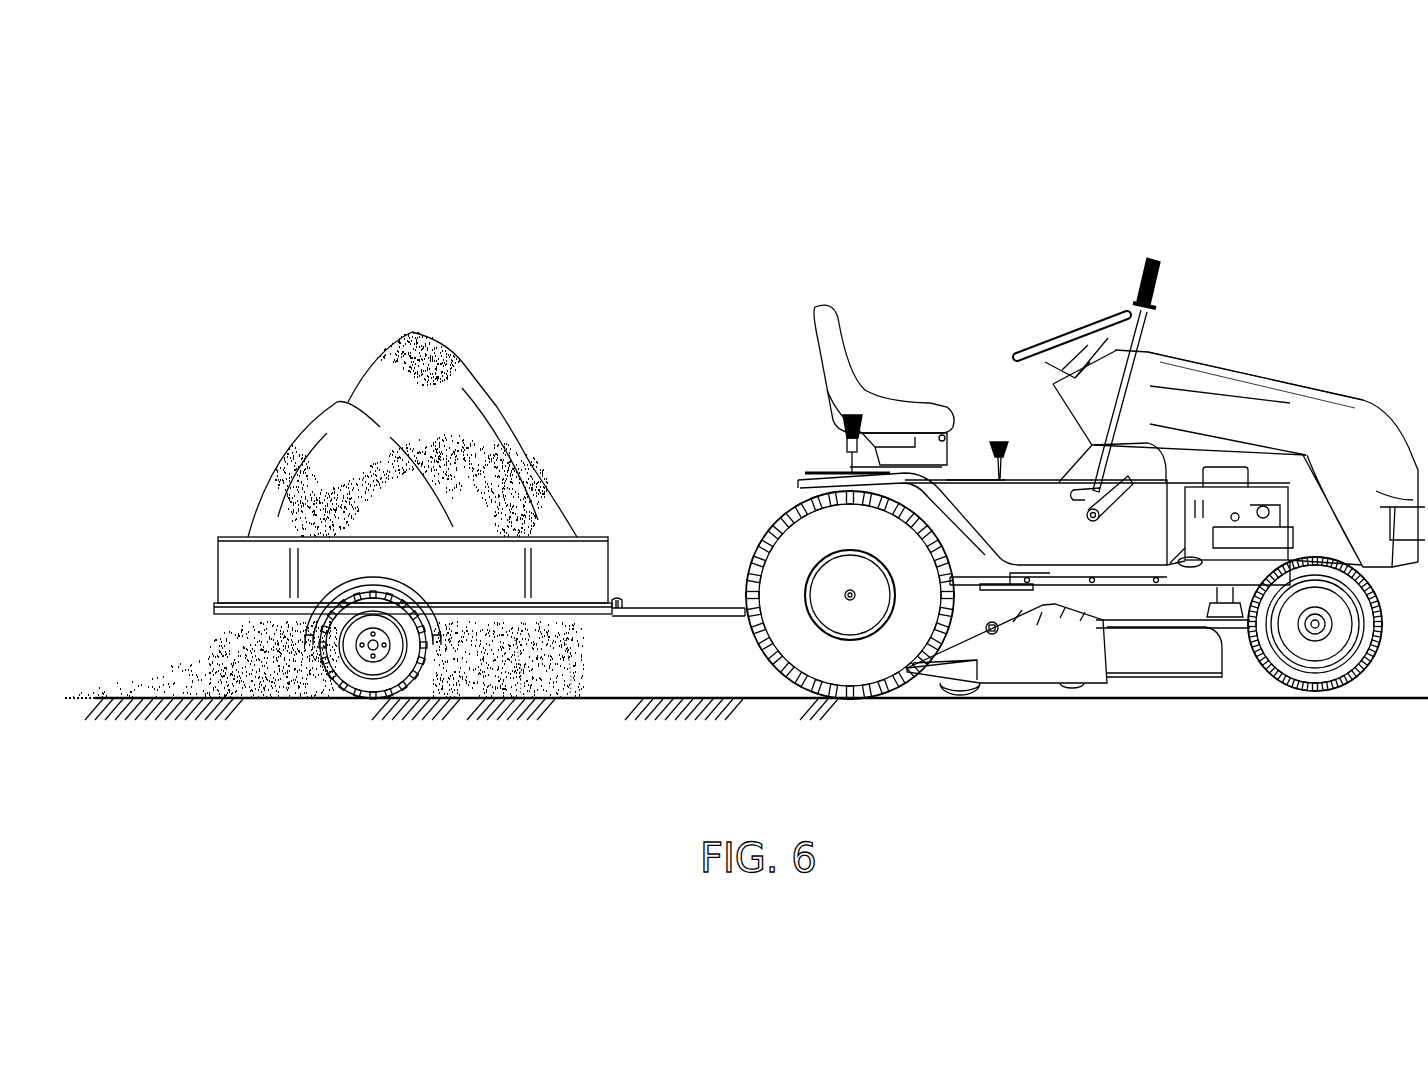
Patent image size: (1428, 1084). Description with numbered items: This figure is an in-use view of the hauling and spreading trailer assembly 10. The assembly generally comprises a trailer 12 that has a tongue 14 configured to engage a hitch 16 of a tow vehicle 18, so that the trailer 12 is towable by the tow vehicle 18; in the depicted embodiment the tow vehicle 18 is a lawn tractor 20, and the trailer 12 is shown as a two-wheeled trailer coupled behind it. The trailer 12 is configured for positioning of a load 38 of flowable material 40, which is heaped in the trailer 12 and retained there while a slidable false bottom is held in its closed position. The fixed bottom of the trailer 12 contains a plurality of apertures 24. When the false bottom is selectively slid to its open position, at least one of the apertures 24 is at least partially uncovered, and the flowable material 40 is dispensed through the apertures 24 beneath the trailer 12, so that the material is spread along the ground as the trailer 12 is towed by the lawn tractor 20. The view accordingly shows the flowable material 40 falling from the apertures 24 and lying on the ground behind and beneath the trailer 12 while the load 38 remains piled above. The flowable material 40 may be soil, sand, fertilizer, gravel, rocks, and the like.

The hauling and spreading trailer assembly 10 is at (1025, 200).
The trailer 12 is at (587, 567).
The tongue 14 is at (658, 612).
The hitch 16 is at (813, 563).
The tow vehicle 18 is at (1213, 365).
The lawn tractor 20 is at (1265, 375).
The apertures 24 is at (473, 620).
The load 38 is at (457, 425).
The flowable material 40 is at (568, 661).